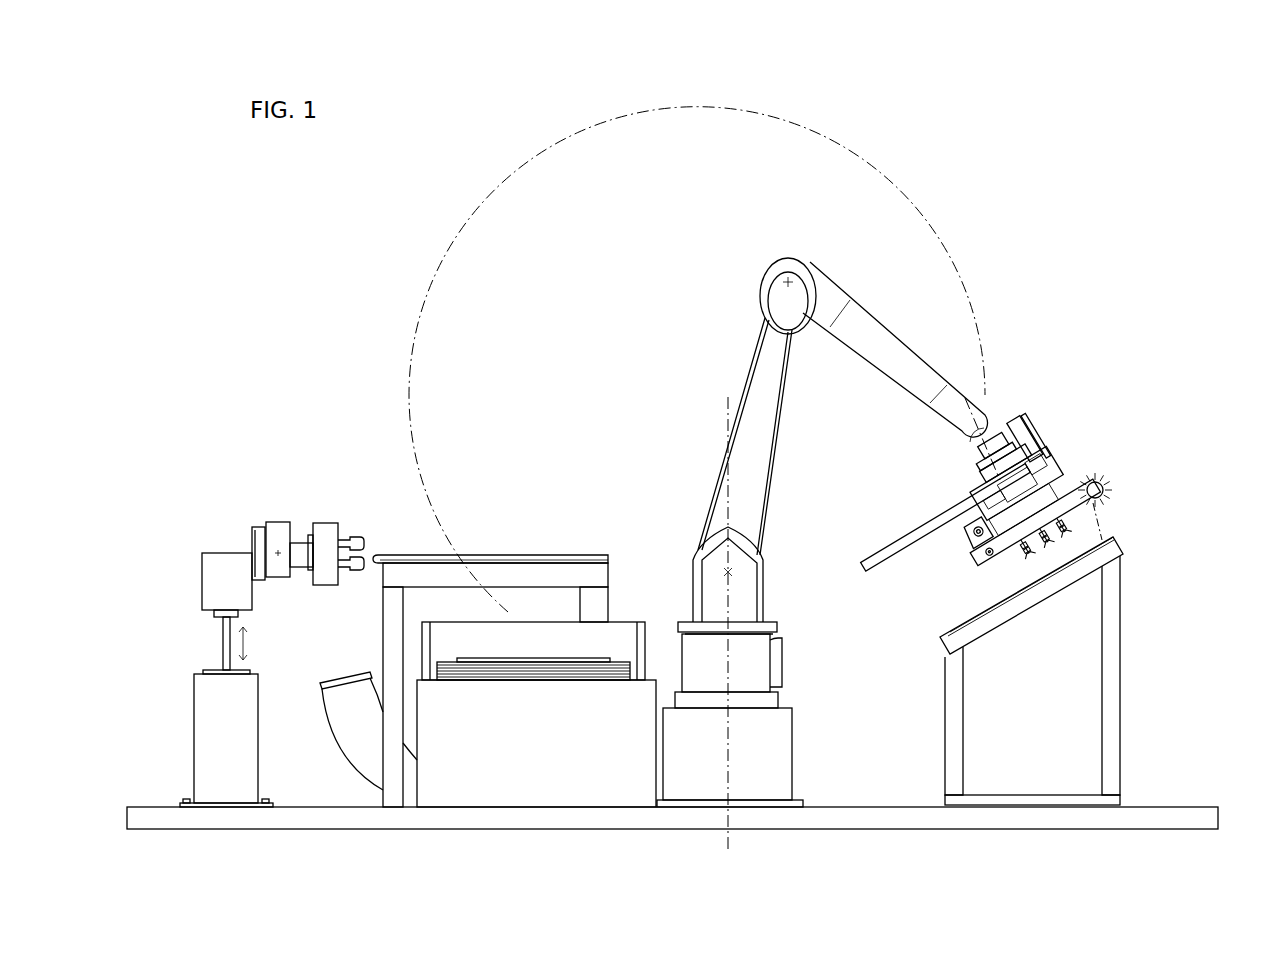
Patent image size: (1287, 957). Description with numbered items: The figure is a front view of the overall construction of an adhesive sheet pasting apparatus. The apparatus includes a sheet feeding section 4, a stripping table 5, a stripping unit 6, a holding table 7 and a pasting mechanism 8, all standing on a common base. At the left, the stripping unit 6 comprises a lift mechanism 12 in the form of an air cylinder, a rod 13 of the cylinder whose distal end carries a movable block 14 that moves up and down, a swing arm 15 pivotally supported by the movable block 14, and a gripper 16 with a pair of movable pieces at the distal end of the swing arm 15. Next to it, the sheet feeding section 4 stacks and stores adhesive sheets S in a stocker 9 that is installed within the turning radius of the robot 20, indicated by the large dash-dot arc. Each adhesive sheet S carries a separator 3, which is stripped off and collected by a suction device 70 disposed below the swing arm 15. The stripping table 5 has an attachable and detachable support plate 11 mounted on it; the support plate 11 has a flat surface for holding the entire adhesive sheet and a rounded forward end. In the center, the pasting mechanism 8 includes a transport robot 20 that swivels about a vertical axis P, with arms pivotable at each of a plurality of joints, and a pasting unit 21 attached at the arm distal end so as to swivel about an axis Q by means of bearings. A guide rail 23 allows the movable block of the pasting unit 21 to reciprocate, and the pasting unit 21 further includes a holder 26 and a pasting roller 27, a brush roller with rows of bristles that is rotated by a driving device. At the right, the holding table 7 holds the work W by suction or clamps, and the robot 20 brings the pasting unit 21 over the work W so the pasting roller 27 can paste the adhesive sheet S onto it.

The separator 3 is at (452, 663).
The adhesive sheet S is at (482, 658).
The sheet feeding section 4 is at (634, 602).
The stripping table 5 is at (608, 576).
The stripping unit 6 is at (184, 518).
The holding table 7 is at (1120, 546).
The pasting mechanism 8 is at (736, 258).
The stocker 9 is at (645, 623).
The support plate 11 is at (598, 555).
The lift mechanism 12 is at (258, 712).
The rod 13 is at (223, 648).
The movable block 14 is at (258, 527).
The swing arm 15 is at (300, 540).
The gripper 16 is at (331, 584).
The transport robot 20 is at (718, 470).
The pasting unit 21 is at (1090, 406).
The guide rail 23 is at (886, 551).
The holder 26 is at (986, 580).
The pasting roller 27 is at (1123, 476).
The suction device 70 is at (347, 743).
The vertical axis P is at (726, 614).
The axis Q is at (974, 440).
The work W is at (950, 630).